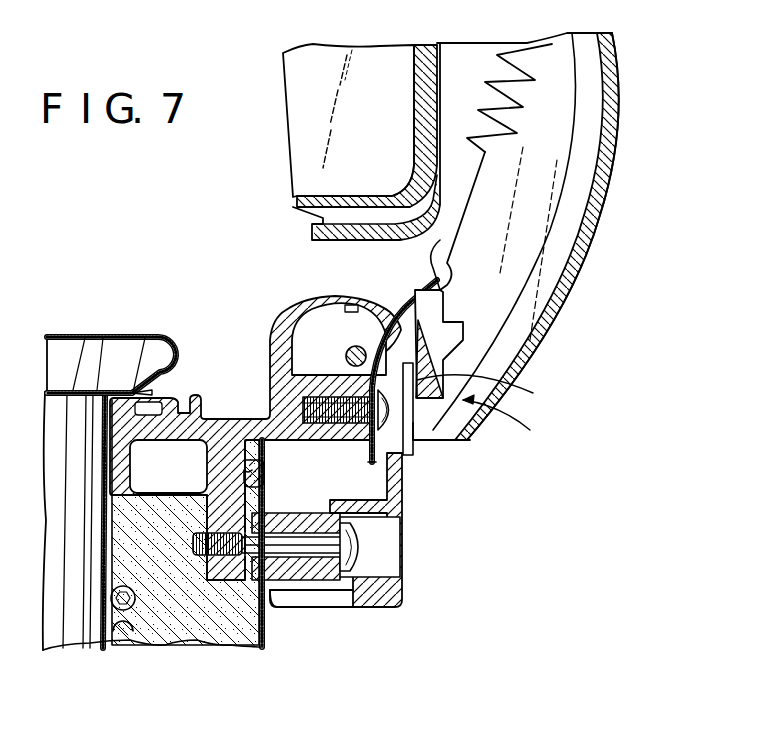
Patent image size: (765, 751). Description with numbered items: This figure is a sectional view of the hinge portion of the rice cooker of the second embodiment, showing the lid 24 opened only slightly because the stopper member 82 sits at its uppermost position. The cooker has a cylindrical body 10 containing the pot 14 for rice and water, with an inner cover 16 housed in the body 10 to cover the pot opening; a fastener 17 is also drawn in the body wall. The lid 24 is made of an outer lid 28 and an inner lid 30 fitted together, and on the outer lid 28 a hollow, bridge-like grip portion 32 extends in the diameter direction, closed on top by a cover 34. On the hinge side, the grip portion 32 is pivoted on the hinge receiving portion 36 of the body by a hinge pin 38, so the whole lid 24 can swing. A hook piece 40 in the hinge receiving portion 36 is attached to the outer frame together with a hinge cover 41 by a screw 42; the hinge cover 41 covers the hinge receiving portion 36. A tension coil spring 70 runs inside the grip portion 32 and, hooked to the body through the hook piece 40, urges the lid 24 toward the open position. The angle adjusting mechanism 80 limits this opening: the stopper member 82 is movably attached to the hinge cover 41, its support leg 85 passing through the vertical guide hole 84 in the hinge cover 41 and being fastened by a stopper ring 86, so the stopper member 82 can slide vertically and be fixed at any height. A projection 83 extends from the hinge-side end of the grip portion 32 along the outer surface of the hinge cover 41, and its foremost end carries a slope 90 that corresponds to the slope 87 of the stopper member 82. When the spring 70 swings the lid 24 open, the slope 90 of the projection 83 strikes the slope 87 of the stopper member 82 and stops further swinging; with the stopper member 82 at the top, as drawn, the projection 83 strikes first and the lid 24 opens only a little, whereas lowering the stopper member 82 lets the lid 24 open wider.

The body 10 is at (267, 633).
The pot 14 is at (93, 607).
The inner cover 16 is at (73, 388).
The fastener 17 is at (123, 627).
The lid 24 is at (440, 68).
The outer lid 28 is at (436, 90).
The inner lid 30 is at (413, 98).
The grip portion 32 is at (620, 62).
The cover 34 is at (620, 140).
The hinge receiving portion 36 is at (290, 317).
The hinge pin 38 is at (347, 355).
The hook piece 40 is at (403, 300).
The hinge cover 41 is at (403, 498).
The screw 42 is at (256, 590).
The tension coil spring 70 is at (515, 107).
The angle adjusting mechanism 80 is at (515, 417).
The stopper member 82 is at (413, 423).
The projection 83 is at (450, 293).
The guide hole 84 is at (413, 420).
The support leg 85 is at (367, 461).
The stopper ring 86 is at (369, 349).
The slope 87 is at (492, 389).
The slope 90 is at (433, 377).